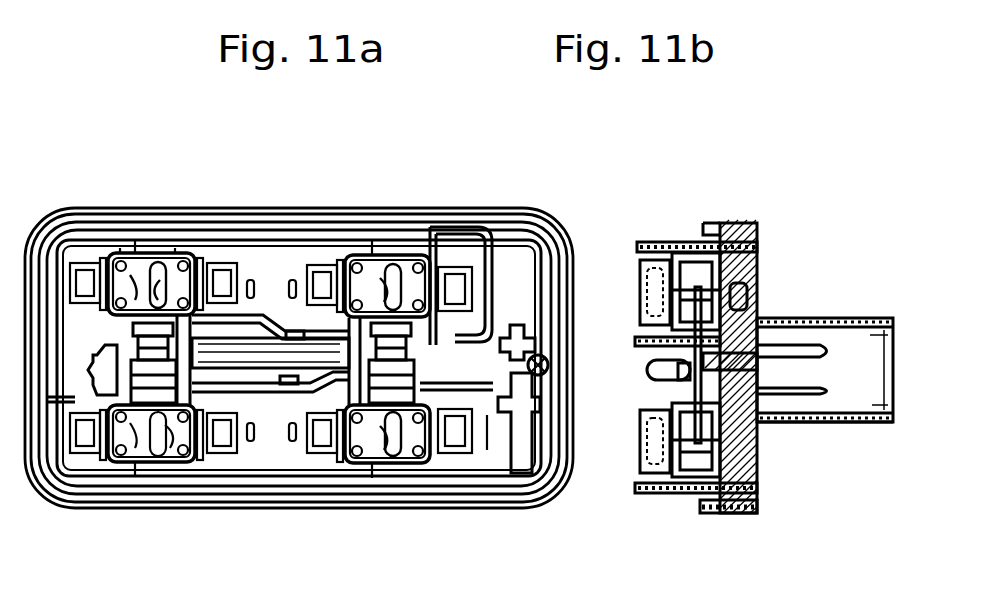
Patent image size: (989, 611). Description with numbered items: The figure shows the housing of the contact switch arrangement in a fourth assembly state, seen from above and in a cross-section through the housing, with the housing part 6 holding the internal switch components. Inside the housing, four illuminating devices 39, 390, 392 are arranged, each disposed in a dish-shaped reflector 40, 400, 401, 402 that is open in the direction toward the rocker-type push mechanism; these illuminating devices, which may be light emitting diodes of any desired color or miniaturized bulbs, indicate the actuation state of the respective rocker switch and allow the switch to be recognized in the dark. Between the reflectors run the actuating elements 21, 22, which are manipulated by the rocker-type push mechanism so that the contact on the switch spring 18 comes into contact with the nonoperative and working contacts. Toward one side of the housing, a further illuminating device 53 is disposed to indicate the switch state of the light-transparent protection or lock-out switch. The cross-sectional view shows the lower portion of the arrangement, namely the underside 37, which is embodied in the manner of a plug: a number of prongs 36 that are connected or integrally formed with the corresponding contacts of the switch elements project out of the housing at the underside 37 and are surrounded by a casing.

In FIG. 11A, the housing 6 is at (548, 232).
In FIG. 11B, the housing 6 is at (760, 268).
In FIG. 11B, the switch spring 18 is at (800, 422).
In FIG. 11A, the actuating element 21 is at (236, 505).
In FIG. 11B, the actuating element 21 is at (640, 475).
In FIG. 11A, the actuating element 22 is at (71, 505).
In FIG. 11B, the prongs 36 is at (845, 357).
In FIG. 11B, the underside 37 is at (855, 422).
In FIG. 11A, the illuminating device 39 is at (190, 505).
In FIG. 11B, the illuminating device 39 is at (637, 447).
In FIG. 11A, the dish-shaped reflector 40 is at (118, 505).
In FIG. 11A, the illuminating device 53 is at (548, 370).
In FIG. 11A, the illuminating device 390 is at (127, 265).
In FIG. 11B, the illuminating device 390 is at (641, 290).
In FIG. 11A, the illuminating device 392 is at (417, 265).
In FIG. 11A, the dish-shaped reflector 400 is at (134, 268).
In FIG. 11A, the dish-shaped reflector 401 is at (385, 505).
In FIG. 11A, the dish-shaped reflector 402 is at (398, 262).